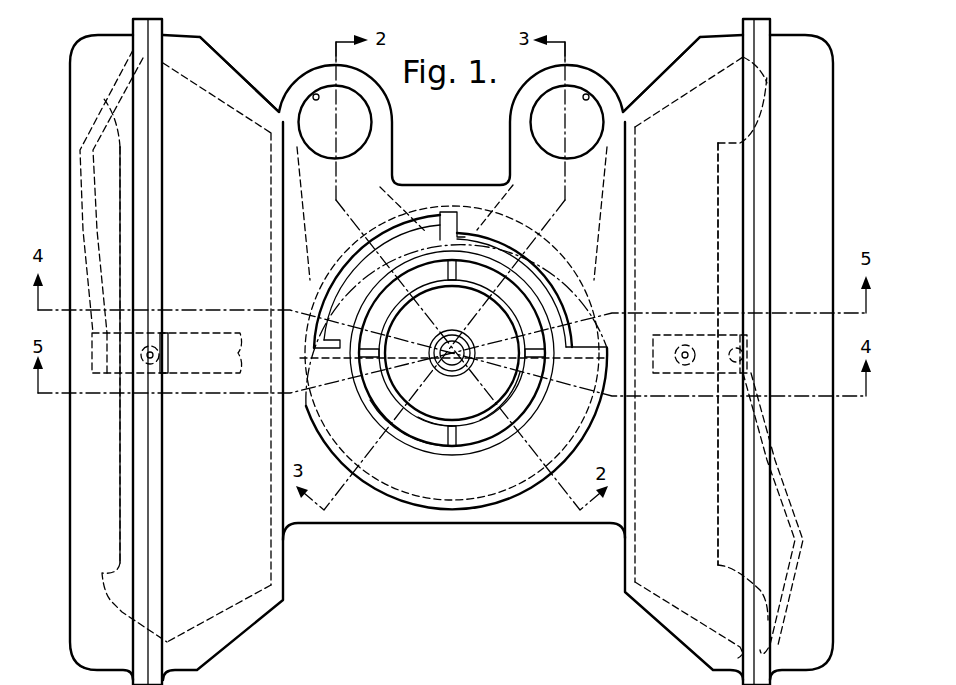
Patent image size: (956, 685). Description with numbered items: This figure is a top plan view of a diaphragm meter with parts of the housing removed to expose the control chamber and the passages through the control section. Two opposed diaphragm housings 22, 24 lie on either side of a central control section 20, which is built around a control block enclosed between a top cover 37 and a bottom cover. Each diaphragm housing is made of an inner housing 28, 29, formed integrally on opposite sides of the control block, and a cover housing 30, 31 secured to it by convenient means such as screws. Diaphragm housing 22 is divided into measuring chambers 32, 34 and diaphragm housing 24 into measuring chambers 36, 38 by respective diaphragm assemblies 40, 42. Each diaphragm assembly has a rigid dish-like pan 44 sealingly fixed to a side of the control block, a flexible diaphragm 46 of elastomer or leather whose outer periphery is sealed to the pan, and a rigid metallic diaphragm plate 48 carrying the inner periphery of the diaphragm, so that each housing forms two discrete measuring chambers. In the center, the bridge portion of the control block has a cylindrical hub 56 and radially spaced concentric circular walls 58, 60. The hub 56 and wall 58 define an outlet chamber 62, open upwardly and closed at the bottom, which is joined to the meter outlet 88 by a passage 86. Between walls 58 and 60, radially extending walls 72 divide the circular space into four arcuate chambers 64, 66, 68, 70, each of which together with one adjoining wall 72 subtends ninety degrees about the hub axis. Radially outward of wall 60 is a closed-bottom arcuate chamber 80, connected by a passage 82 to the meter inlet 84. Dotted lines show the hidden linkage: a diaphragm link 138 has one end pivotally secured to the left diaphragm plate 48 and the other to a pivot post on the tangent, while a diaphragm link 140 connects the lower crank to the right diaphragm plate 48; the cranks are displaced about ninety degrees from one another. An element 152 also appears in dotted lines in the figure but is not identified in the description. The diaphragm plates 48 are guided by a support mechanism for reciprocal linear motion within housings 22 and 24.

The central control section 20 is at (446, 178).
The diaphragm housing 22 is at (162, 12).
The diaphragm housing 24 is at (740, 15).
The inner housing 28 is at (215, 56).
The inner housing 29 is at (680, 62).
The cover housing 30 is at (76, 55).
The cover housing 31 is at (833, 57).
The measuring chamber 32 is at (102, 355).
The measuring chamber 34 is at (237, 359).
The measuring chamber 36 is at (660, 354).
The top cover 37 is at (568, 682).
The measuring chamber 38 is at (763, 354).
The diaphragm assembly 40 is at (110, 616).
The diaphragm assembly 42 is at (684, 631).
The pan 44 is at (232, 605).
The diaphragm 46 is at (100, 576).
The diaphragm plate 48 is at (120, 432).
The hub 56 is at (463, 341).
The wall 58 is at (395, 390).
The wall 60 is at (374, 428).
The outlet chamber 62 is at (474, 353).
The arcuate chamber 64 is at (386, 312).
The arcuate chamber 66 is at (490, 270).
The arcuate chamber 68 is at (512, 400).
The arcuate chamber 70 is at (428, 420).
The radially extending wall 72 is at (448, 282).
The arcuate chamber 80 is at (372, 238).
The passage 82 is at (400, 177).
The meter inlet 84 is at (316, 94).
The passage 86 is at (497, 177).
The meter outlet 88 is at (586, 94).
The diaphragm link 138 is at (224, 332).
The diaphragm link 140 is at (669, 332).
The cable 152 is at (100, 97).